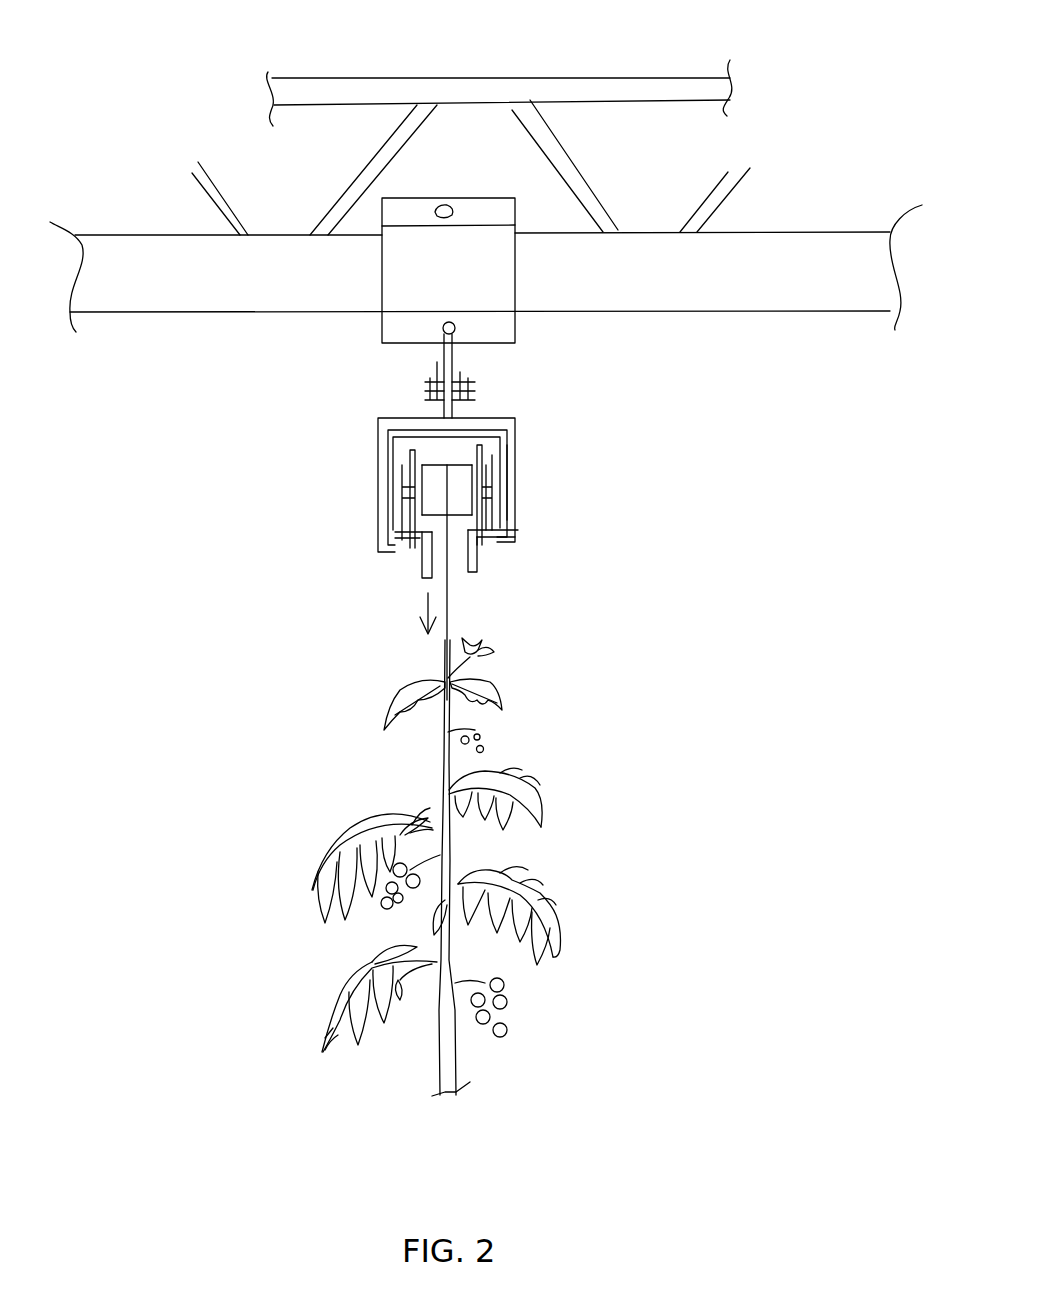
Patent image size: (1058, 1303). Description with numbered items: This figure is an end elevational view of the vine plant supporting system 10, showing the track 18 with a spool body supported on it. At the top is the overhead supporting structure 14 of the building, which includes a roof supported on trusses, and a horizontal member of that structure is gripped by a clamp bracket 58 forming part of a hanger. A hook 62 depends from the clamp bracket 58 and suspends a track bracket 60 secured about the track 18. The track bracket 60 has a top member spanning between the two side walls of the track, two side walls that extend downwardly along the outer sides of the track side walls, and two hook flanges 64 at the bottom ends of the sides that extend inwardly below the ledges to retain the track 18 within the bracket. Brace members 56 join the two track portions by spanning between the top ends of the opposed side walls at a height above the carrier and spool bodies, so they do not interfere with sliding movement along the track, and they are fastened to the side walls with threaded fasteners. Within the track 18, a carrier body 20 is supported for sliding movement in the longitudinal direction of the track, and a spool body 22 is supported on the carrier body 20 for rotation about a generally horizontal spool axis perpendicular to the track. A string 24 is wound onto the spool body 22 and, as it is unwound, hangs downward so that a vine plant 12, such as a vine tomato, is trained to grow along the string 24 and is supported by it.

The vine plant supporting system 10 is at (78, 182).
The vine plant 12 is at (447, 857).
The overhead supporting structure 14 is at (532, 90).
The track 18 is at (378, 450).
The carrier body 20 is at (400, 513).
The spool body 22 is at (458, 477).
The string 24 is at (450, 625).
The brace member 56 is at (507, 417).
The clamp bracket 58 is at (405, 288).
The track bracket 60 is at (513, 503).
The hook 62 is at (457, 365).
The hook flange 64 is at (398, 552).